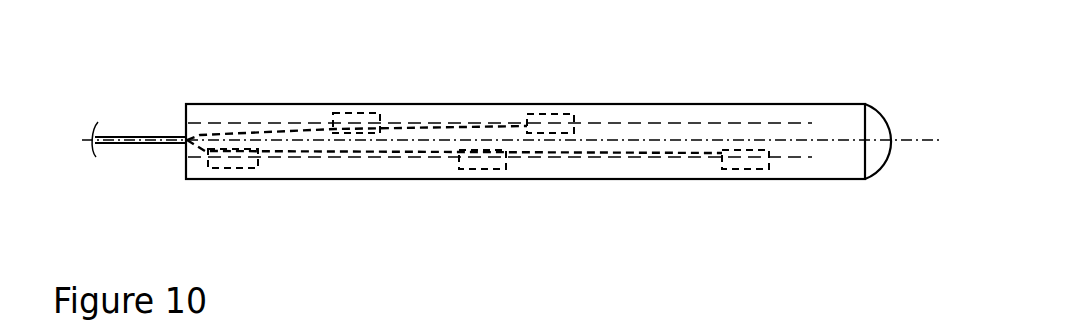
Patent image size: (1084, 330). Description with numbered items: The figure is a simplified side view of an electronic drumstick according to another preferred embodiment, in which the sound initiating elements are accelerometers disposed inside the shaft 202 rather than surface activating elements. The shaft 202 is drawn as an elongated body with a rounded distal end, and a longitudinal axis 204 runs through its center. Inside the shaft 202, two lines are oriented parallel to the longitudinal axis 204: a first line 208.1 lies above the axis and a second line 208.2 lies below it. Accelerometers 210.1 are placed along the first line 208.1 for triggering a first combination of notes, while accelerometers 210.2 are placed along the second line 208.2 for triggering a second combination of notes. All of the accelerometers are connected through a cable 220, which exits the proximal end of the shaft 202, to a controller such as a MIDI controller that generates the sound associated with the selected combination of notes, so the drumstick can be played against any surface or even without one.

The shaft 202 is at (667, 114).
The longitudinal axis 204 is at (937, 143).
The cable 220 is at (128, 137).
The line 208.1 is at (740, 123).
The line 208.2 is at (800, 158).
The accelerometers 210.1 is at (360, 120).
The accelerometers 210.2 is at (237, 168).